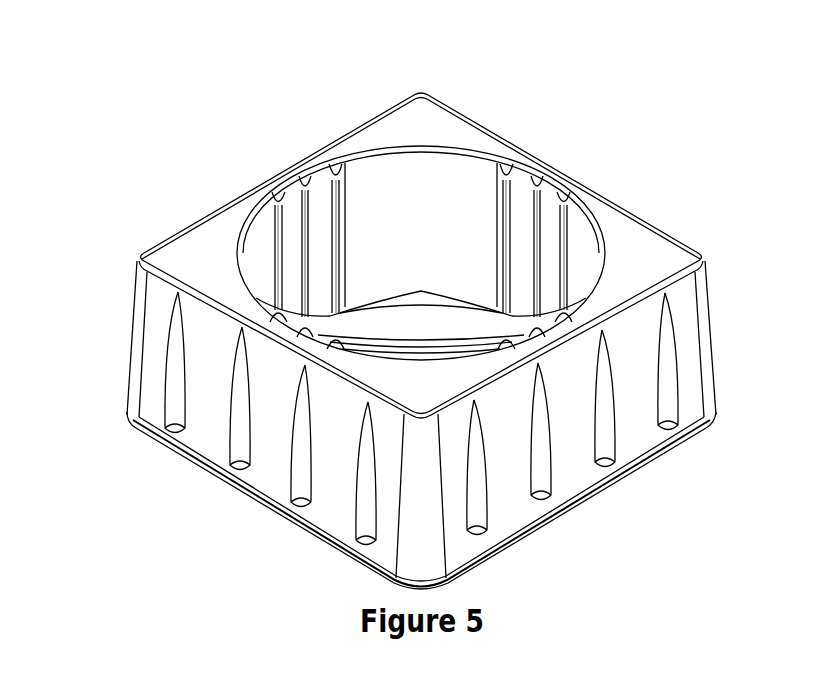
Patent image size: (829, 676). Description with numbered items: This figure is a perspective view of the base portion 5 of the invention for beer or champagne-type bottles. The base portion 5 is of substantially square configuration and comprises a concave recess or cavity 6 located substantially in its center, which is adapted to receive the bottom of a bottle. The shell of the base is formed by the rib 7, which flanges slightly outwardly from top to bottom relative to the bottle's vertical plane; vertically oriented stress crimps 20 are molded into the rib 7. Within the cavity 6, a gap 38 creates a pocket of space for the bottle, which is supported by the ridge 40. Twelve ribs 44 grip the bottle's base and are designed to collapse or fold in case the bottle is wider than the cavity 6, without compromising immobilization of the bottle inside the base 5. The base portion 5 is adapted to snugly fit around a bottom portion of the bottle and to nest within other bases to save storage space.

The base portion 5 is at (248, 548).
The cavity 6 is at (413, 202).
The rib 7 is at (210, 395).
The stress crimps 20 is at (237, 444).
The gap 38 is at (425, 350).
The ridge 40 is at (387, 332).
The ribs 44 is at (333, 193).